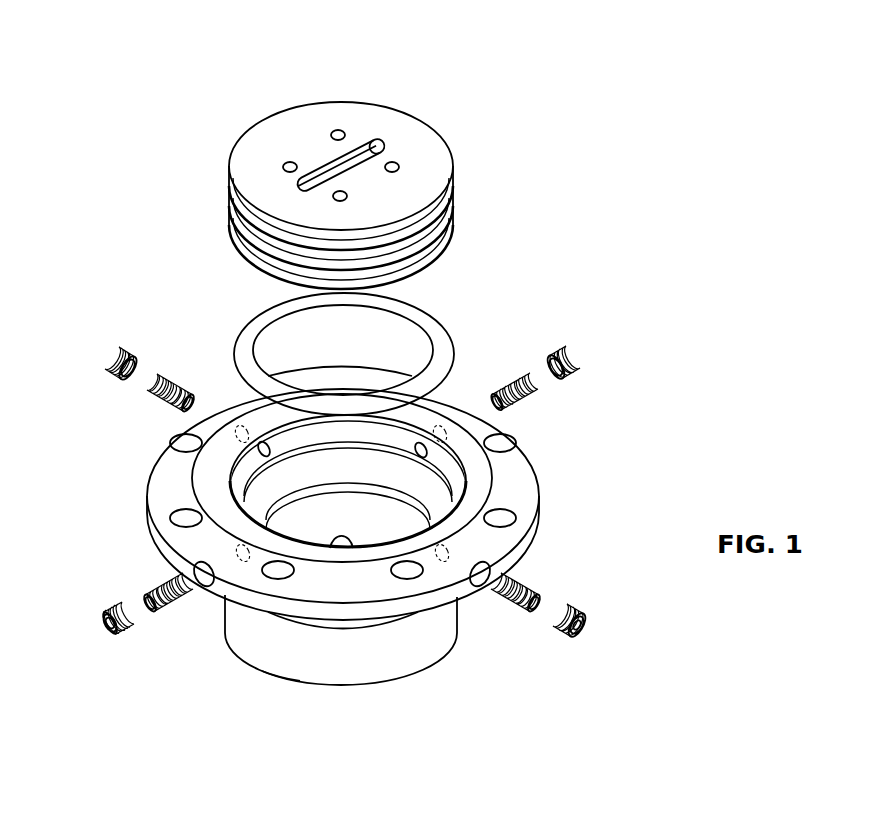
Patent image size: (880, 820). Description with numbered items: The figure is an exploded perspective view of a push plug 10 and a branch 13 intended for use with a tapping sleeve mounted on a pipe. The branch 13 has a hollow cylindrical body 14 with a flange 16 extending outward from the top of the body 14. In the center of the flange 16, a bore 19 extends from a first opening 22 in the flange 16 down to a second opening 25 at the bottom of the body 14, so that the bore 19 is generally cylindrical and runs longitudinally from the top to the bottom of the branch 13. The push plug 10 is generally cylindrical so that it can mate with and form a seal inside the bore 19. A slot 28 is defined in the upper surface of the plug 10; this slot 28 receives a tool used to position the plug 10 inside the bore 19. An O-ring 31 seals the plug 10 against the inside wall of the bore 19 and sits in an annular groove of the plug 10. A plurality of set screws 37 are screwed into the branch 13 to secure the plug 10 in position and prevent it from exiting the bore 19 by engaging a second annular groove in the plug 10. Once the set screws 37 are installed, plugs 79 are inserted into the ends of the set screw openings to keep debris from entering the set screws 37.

The push plug 10 is at (417, 138).
The branch 13 is at (368, 517).
The hollow cylindrical body 14 is at (240, 628).
The flange 16 is at (172, 481).
The bore 19 is at (392, 497).
The first opening 22 is at (330, 542).
The second opening 25 is at (290, 683).
The slot 28 is at (337, 168).
The O-ring 31 is at (250, 323).
The set screws 37 is at (170, 383).
The plugs 79 is at (115, 352).